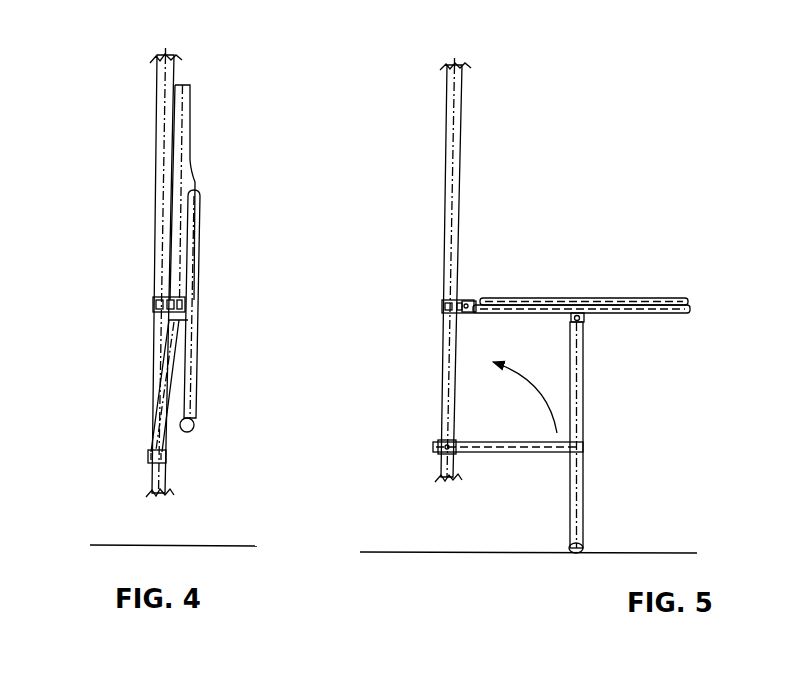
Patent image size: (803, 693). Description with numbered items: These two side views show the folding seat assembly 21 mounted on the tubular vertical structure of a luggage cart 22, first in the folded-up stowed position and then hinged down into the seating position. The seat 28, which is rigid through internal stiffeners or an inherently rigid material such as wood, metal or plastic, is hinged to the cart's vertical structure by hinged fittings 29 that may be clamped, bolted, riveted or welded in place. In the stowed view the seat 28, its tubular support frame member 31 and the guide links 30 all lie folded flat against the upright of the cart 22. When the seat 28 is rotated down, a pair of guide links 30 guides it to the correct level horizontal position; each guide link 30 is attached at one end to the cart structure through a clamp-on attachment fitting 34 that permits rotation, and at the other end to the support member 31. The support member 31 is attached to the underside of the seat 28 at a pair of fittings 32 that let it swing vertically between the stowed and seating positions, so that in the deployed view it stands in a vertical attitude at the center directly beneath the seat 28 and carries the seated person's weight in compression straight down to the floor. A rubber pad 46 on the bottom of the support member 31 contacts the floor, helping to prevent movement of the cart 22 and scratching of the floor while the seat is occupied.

In FIG. 4, the folding seat assembly 21 is at (184, 285).
In FIG. 4, the luggage cart 22 is at (156, 83).
In FIG. 5, the luggage cart 22 is at (448, 164).
In FIG. 4, the seat 28 is at (196, 167).
In FIG. 5, the seat 28 is at (628, 298).
In FIG. 5, the hinged fittings 29 is at (442, 306).
In FIG. 4, the guide links 30 is at (170, 406).
In FIG. 5, the guide links 30 is at (537, 454).
In FIG. 4, the tubular support frame member 31 is at (206, 350).
In FIG. 5, the tubular support frame member 31 is at (583, 398).
In FIG. 5, the fittings 32 is at (472, 300).
In FIG. 4, the clamp-on attachment fittings 34 is at (157, 456).
In FIG. 5, the clamp-on attachment fittings 34 is at (440, 448).
In FIG. 4, the rubber pads 46 is at (194, 424).
In FIG. 5, the rubber pads 46 is at (584, 545).